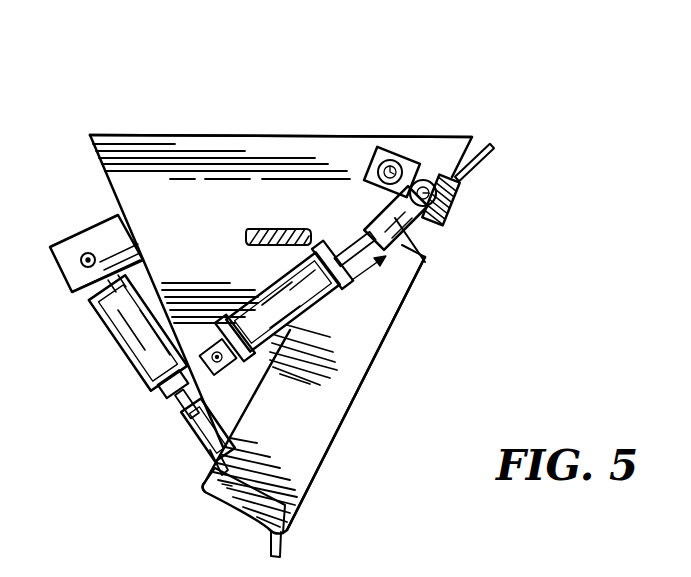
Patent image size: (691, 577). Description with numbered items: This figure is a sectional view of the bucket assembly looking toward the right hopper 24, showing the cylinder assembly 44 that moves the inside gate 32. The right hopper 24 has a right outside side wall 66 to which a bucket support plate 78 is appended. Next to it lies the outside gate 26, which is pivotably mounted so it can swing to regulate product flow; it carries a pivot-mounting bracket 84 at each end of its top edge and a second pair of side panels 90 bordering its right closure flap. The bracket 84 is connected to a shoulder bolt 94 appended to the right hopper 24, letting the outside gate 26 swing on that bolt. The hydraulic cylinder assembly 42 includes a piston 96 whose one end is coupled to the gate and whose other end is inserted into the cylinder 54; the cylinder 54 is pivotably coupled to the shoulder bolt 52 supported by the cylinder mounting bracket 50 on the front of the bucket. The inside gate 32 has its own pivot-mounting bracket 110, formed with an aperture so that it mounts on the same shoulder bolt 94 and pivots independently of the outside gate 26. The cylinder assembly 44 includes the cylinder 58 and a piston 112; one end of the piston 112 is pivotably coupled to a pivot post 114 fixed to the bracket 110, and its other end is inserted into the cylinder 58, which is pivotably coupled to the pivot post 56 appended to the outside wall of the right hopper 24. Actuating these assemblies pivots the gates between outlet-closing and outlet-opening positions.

The right hopper 24 is at (426, 124).
The outside gate 26 is at (339, 458).
The inside gate 32 is at (470, 187).
The hydraulic cylinder assembly 42 is at (121, 375).
The cylinder assembly 44 is at (244, 273).
The cylinder mounting bracket 50 is at (108, 226).
The shoulder bolt 52 is at (82, 262).
The cylinder 54 is at (114, 341).
The pivot post 56 is at (214, 348).
The cylinder 58 is at (384, 338).
The right outside side wall 66 is at (288, 150).
The bucket support plate 78 is at (279, 228).
The pivot-mounting bracket 84 is at (360, 200).
The side panels 90 is at (205, 492).
The shoulder bolt 94 is at (391, 168).
The piston 96 is at (188, 406).
The pivot-mounting bracket 110 is at (420, 163).
The piston 112 is at (423, 236).
The pivot post 114 is at (463, 203).